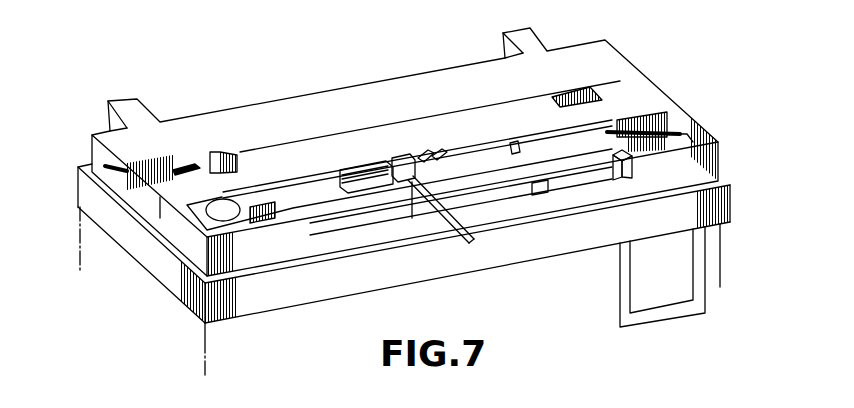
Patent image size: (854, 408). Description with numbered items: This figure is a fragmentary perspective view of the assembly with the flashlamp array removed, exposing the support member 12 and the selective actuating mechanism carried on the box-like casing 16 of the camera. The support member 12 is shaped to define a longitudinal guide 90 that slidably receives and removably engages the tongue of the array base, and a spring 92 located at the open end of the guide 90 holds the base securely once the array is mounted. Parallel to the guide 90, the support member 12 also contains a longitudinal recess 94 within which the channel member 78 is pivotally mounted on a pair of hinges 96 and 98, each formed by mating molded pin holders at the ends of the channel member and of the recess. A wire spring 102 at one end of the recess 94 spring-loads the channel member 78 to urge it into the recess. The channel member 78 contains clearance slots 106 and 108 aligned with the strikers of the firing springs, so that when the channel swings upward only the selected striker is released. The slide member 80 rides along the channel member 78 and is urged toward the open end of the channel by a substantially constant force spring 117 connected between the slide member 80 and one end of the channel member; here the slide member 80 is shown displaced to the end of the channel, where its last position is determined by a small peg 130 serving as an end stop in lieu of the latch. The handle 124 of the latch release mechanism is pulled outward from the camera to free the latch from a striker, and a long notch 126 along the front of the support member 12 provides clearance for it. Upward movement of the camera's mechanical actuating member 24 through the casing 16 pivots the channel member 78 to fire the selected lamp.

The support member 12 is at (613, 52).
The casing 16 is at (203, 351).
The mechanical actuating member 24 is at (559, 209).
The channel member 78 is at (605, 128).
The slide member 80 is at (364, 160).
The longitudinal guide 90 is at (236, 158).
The spring 92 is at (172, 160).
The longitudinal recess 94 is at (662, 125).
The hinge 96 is at (264, 222).
The hinge 98 is at (636, 171).
The wire spring 102 is at (681, 133).
The clearance slot 106 is at (518, 150).
The clearance slot 108 is at (433, 158).
The constant force spring 117 is at (322, 186).
The handle 124 is at (466, 244).
The notch 126 is at (510, 198).
The peg 130 is at (344, 186).